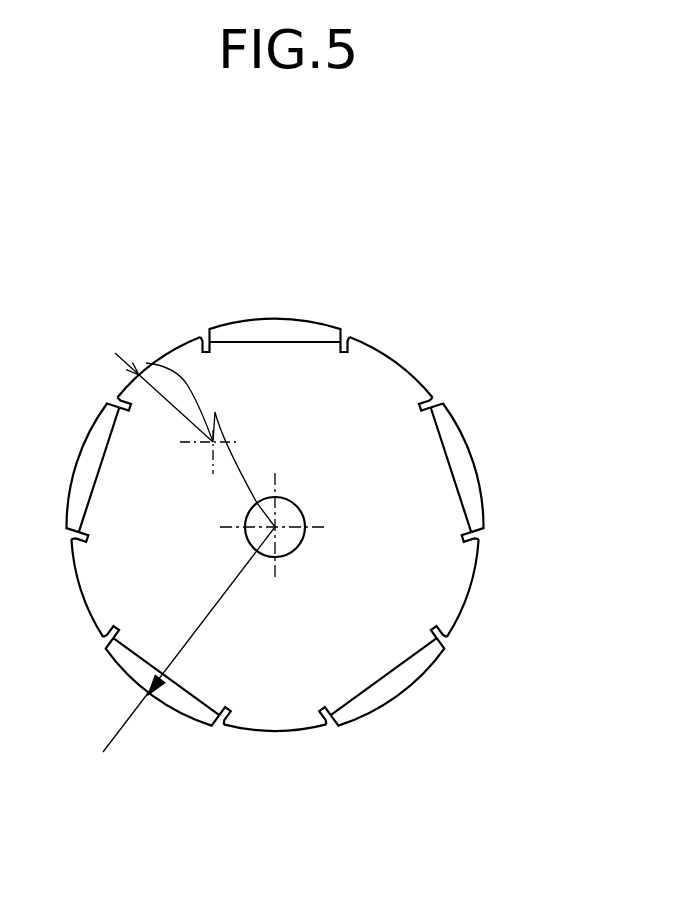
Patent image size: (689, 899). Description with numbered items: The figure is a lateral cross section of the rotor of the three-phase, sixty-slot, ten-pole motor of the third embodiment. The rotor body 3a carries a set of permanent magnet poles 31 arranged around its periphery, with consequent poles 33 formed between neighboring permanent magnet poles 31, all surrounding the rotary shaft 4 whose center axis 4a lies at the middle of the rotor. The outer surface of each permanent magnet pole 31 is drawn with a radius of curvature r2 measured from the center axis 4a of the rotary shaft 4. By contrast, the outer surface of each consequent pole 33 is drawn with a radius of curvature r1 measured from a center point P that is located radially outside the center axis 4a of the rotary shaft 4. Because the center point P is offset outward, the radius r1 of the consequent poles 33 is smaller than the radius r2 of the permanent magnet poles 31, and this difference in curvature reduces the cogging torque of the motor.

The rotor core 3a is at (362, 383).
The permanent magnet pole 31 is at (458, 470).
The consequent pole 33 is at (187, 355).
The rotary shaft 4 is at (297, 547).
The shaft center 4a is at (275, 527).
The center point P is at (145, 363).
The radius of curvature of the outer surface of each consequent pole r1 is at (176, 413).
The radius of curvature of the outer surface of each permanent magnet pole r2 is at (189, 639).